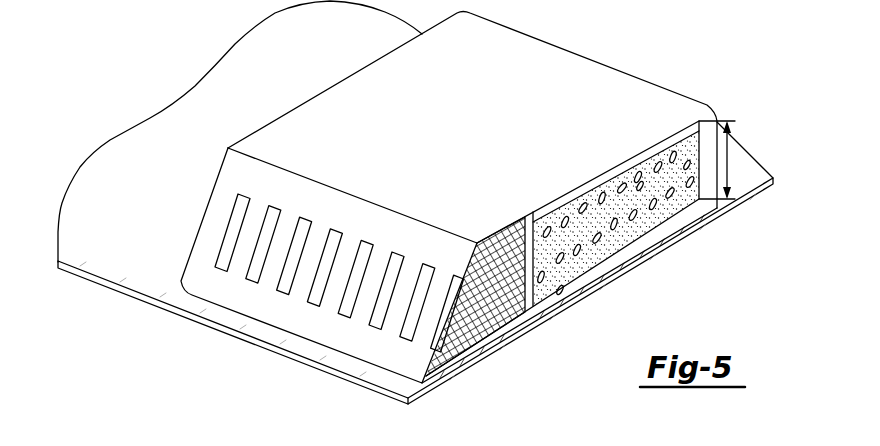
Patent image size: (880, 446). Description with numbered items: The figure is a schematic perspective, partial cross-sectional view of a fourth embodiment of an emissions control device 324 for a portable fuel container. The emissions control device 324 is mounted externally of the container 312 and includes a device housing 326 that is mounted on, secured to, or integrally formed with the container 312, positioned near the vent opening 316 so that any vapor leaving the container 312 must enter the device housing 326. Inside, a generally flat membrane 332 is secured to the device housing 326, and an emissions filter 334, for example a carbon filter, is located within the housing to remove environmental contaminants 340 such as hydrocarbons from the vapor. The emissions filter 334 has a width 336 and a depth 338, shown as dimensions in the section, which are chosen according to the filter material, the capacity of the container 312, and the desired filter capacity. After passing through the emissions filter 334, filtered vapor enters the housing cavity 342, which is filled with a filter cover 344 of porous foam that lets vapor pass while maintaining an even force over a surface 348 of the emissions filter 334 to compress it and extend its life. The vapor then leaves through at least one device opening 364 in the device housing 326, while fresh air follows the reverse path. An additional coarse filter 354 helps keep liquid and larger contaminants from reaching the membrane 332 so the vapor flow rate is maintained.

The container 312 is at (512, 335).
The vent opening 316 is at (657, 252).
The emissions control device 324 is at (150, 37).
The device housing 326 is at (381, 82).
The membrane 332 is at (547, 306).
The emissions filter 334 is at (683, 200).
The width 336 is at (543, 226).
The depth 338 is at (730, 157).
The environmental contaminants 340 is at (617, 233).
The housing cavity 342 is at (510, 296).
The filter cover 344 is at (473, 325).
The surface 348 is at (528, 256).
The coarse filter 354 is at (577, 288).
The device opening 364 is at (263, 252).